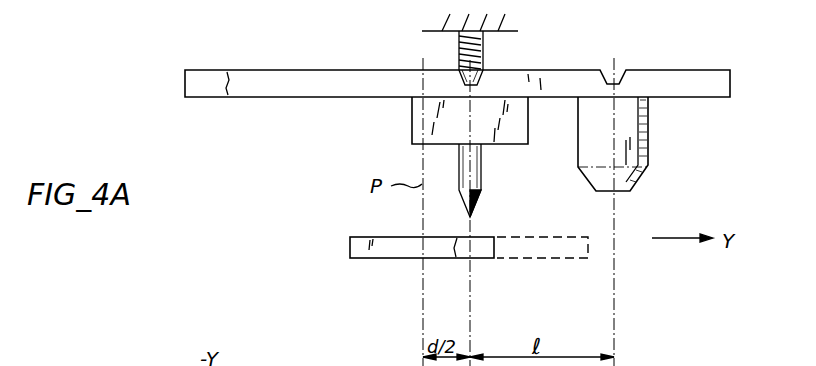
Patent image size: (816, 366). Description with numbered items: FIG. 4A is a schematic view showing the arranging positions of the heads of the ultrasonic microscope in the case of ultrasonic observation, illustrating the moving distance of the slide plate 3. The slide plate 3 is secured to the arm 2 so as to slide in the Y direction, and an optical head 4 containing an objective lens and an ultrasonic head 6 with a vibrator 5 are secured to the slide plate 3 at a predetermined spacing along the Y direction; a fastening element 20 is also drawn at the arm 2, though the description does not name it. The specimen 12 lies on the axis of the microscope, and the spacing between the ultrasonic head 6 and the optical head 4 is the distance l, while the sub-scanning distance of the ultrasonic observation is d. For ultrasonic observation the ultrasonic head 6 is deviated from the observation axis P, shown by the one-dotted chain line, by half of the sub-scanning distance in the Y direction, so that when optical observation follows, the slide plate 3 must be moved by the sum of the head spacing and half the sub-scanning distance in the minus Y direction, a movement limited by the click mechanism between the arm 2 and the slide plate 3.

The arm 2 is at (508, 31).
The slide plate 3 is at (685, 82).
The optical head 4 is at (649, 128).
The vibrator 5 is at (515, 125).
The ultrasonic head 6 is at (482, 175).
The specimen 12 is at (349, 250).
The screw 20 is at (456, 50).